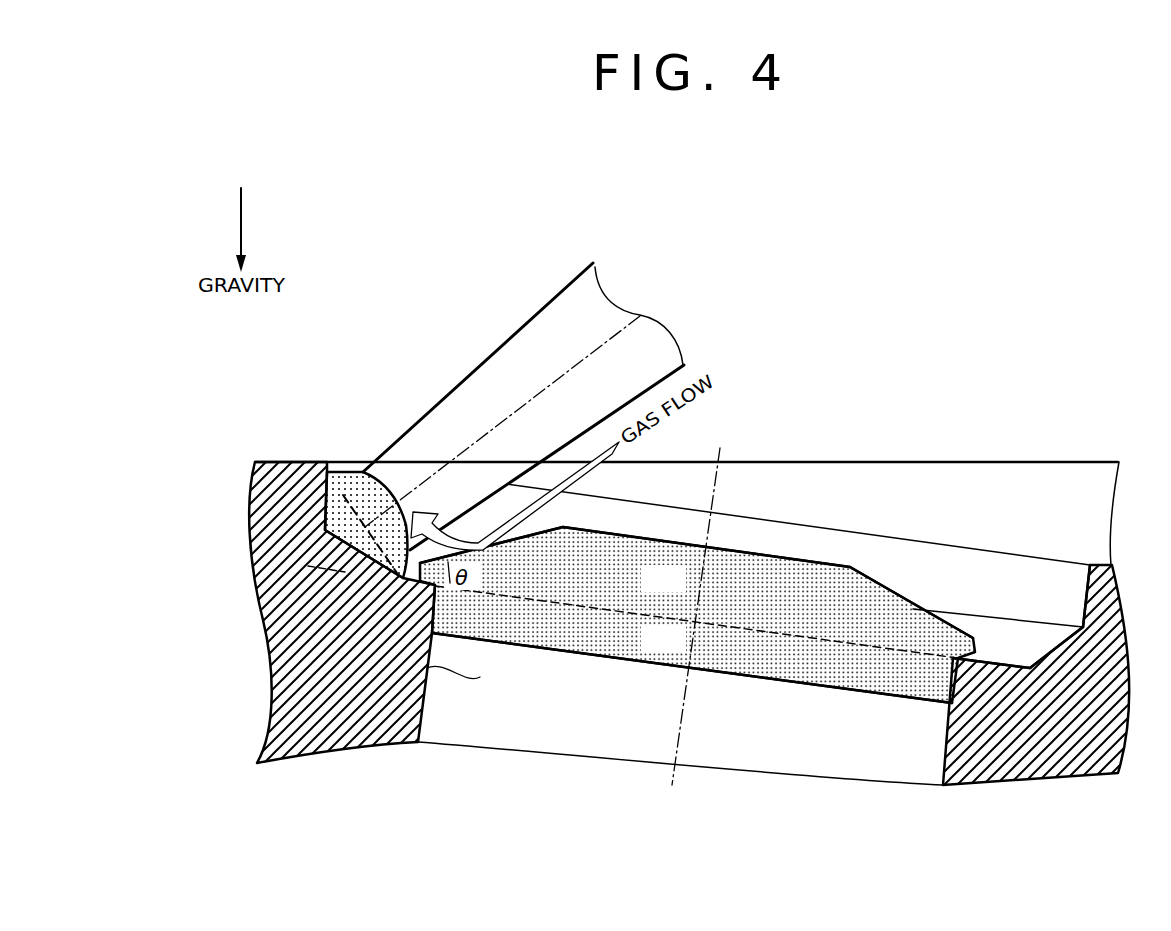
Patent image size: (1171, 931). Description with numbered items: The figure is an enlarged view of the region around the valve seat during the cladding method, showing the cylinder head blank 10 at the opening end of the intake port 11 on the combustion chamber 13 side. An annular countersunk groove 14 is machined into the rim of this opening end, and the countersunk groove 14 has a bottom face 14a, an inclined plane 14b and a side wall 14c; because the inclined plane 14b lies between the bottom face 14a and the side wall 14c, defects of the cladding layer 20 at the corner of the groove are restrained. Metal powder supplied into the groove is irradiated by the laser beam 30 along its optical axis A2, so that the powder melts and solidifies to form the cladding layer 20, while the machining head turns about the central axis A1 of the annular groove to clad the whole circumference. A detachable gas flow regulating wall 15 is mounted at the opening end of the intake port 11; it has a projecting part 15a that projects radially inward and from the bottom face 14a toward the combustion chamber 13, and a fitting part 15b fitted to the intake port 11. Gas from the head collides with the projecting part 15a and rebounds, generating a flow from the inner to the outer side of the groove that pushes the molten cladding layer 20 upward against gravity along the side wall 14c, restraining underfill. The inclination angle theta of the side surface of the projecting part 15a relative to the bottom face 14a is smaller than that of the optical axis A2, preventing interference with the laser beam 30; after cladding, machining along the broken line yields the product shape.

The cylinder head blank 10 is at (299, 462).
The intake port 11 is at (535, 740).
The combustion chamber 13 is at (967, 478).
The countersunk groove 14 is at (1090, 563).
The bottom face 14a is at (993, 658).
The inclined plane 14b is at (1042, 657).
The side wall 14c is at (1087, 595).
The gas flow regulating wall 15 is at (762, 683).
The projecting part 15a is at (638, 540).
The fitting part 15b is at (638, 598).
The cladding layer 20 is at (339, 462).
The laser beam 30 is at (562, 300).
The central axis A1 is at (705, 604).
The optical axis A2 is at (640, 316).